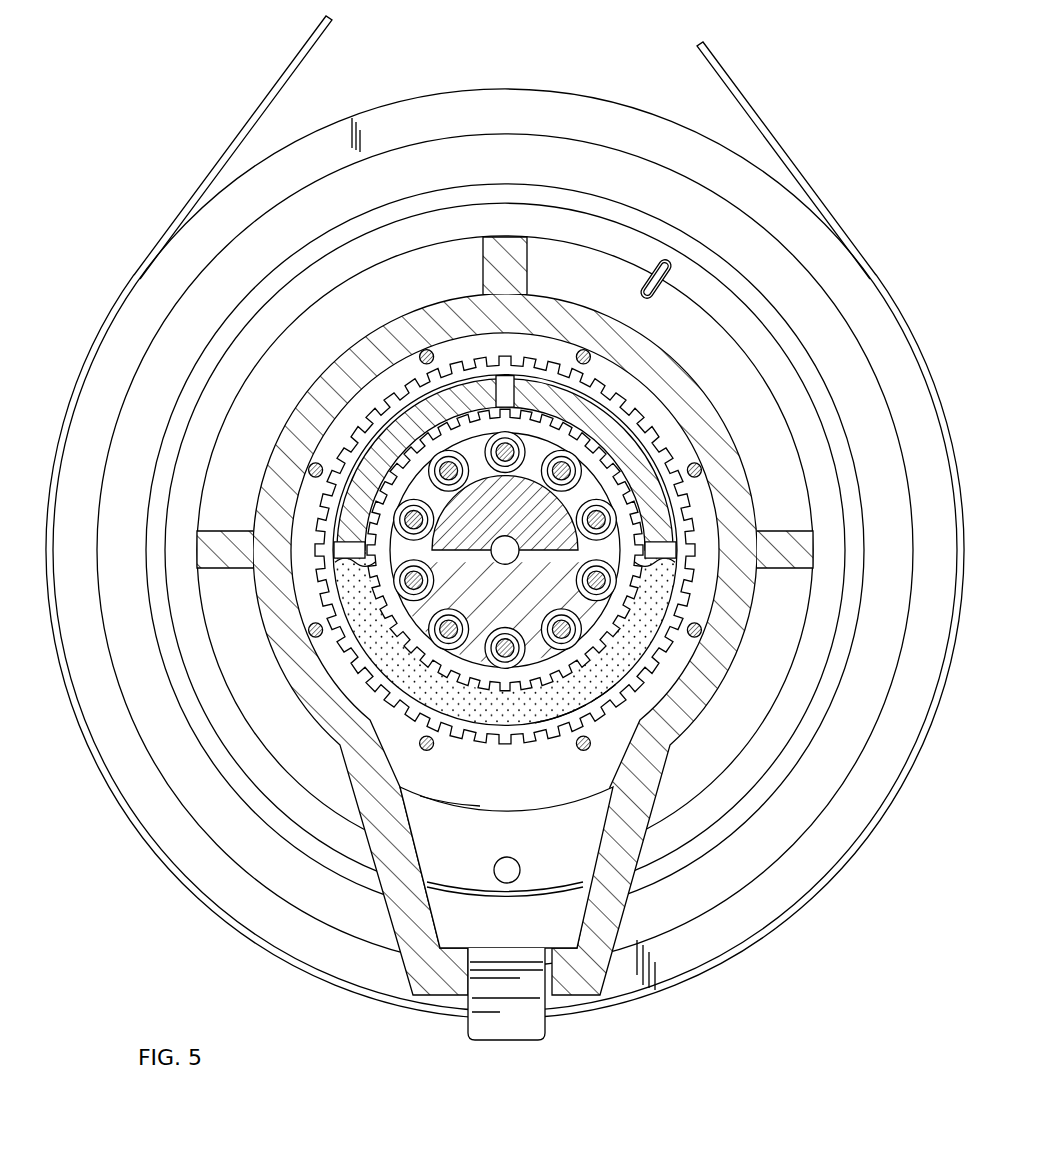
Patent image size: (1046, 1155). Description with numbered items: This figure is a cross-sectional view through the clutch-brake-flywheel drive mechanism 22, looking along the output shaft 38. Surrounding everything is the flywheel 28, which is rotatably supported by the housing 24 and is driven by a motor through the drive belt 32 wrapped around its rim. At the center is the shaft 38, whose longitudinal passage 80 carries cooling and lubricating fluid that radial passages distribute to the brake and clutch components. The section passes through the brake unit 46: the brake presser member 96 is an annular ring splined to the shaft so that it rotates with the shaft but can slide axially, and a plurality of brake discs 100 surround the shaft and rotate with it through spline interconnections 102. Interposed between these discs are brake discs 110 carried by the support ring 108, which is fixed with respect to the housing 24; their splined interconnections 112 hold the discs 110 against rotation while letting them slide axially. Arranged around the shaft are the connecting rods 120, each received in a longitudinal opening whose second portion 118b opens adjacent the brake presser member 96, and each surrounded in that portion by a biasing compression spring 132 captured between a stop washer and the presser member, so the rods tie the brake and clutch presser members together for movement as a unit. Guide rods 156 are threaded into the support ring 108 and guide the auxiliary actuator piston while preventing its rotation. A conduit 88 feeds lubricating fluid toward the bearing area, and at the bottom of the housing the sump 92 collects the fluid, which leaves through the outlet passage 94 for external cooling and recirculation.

The drive mechanism 22 is at (166, 151).
The housing 24 is at (368, 405).
The flywheel 28 is at (603, 118).
The drive belt 32 is at (748, 97).
The shaft 38 is at (518, 525).
The brake unit 46 is at (362, 396).
The longitudinal passage 80 is at (492, 547).
The conduit 88 is at (660, 295).
The sump 92 is at (521, 941).
The outlet passage 94 is at (540, 1024).
The brake presser member 96 is at (640, 458).
The brake discs 100 is at (512, 728).
The spline interconnections 102 is at (519, 690).
The support ring 108 is at (445, 789).
The brake discs 110 is at (646, 683).
The splined interconnections 112 is at (587, 752).
The second portion of opening 118b is at (456, 622).
The connecting rods 120 is at (563, 490).
The biasing compression spring 132 is at (511, 642).
The guide rods 156 is at (583, 351).